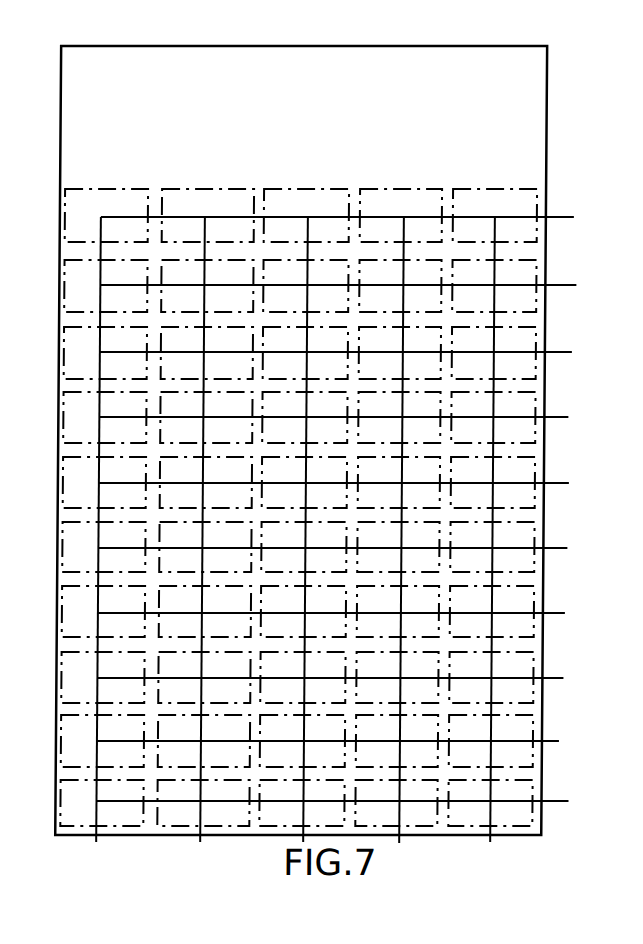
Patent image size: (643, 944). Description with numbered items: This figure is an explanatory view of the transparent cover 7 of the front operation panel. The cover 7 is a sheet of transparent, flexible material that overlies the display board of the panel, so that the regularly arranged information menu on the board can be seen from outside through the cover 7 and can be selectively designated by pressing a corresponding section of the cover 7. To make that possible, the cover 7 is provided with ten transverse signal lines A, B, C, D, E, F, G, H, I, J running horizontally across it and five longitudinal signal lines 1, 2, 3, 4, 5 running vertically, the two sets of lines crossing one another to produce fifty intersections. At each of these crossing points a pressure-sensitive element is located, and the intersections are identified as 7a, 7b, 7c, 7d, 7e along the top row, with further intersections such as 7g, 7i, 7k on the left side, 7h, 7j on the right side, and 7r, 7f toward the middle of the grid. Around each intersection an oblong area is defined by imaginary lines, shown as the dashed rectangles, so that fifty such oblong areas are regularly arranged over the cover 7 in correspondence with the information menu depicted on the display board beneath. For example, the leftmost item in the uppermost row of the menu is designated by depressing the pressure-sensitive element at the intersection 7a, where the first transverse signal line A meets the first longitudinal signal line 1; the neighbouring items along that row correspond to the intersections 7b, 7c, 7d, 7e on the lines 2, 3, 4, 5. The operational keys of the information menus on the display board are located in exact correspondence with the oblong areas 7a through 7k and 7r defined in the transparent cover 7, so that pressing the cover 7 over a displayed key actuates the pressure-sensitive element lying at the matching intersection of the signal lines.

The transparent cover 7 is at (546, 101).
The intersection 7a is at (114, 202).
The intersection 7b is at (209, 205).
The intersection 7c is at (297, 205).
The intersection 7d is at (414, 205).
The intersection 7e is at (488, 205).
The intersection 7f is at (320, 671).
The intersection 7g is at (90, 350).
The intersection 7h is at (502, 349).
The intersection 7i is at (82, 475).
The intersection 7j is at (521, 471).
The intersection 7k is at (166, 538).
The intersection 7r is at (331, 599).
The transverse signal line A is at (348, 217).
The transverse signal line B is at (348, 285).
The transverse signal line C is at (346, 352).
The transverse signal line D is at (344, 417).
The transverse signal line E is at (343, 483).
The transverse signal line F is at (342, 548).
The transverse signal line G is at (342, 613).
The transverse signal line H is at (341, 678).
The transverse signal line I is at (334, 741).
The transverse signal line J is at (338, 801).
The longitudinal signal line 1 is at (96, 543).
The longitudinal signal line 2 is at (204, 543).
The longitudinal signal line 3 is at (308, 842).
The longitudinal signal line 4 is at (404, 543).
The longitudinal signal line 5 is at (493, 543).